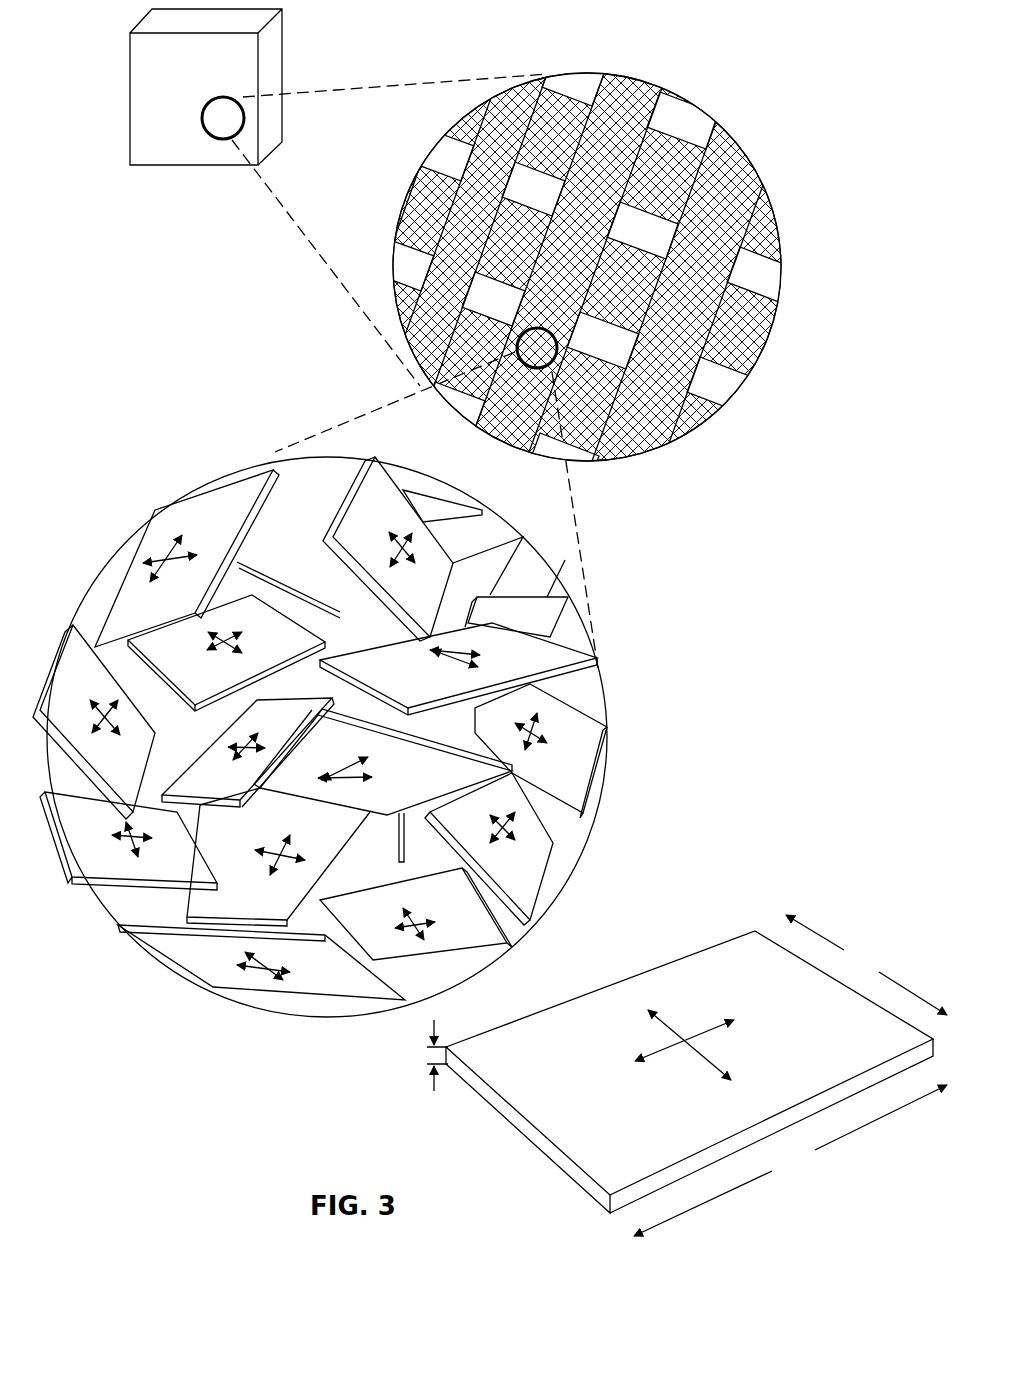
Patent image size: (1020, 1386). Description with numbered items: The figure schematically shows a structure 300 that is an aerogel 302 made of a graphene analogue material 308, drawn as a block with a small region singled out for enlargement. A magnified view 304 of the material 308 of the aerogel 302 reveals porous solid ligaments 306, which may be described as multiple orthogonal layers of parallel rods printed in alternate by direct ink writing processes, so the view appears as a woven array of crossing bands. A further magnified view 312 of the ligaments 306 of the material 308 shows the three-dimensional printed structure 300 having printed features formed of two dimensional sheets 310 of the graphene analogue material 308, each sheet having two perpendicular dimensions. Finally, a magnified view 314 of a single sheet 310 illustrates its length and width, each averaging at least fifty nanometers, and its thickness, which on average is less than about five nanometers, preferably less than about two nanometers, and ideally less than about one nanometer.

The structure 300 is at (115, 279).
The aerogel 302 is at (125, 17).
The magnified view 304 is at (720, 86).
The porous solid ligaments 306 is at (732, 158).
The graphene analogue material 308 is at (487, 195).
The two dimensional sheets 310 is at (234, 516).
The magnified view 312 is at (125, 490).
The magnified view 314 is at (736, 887).